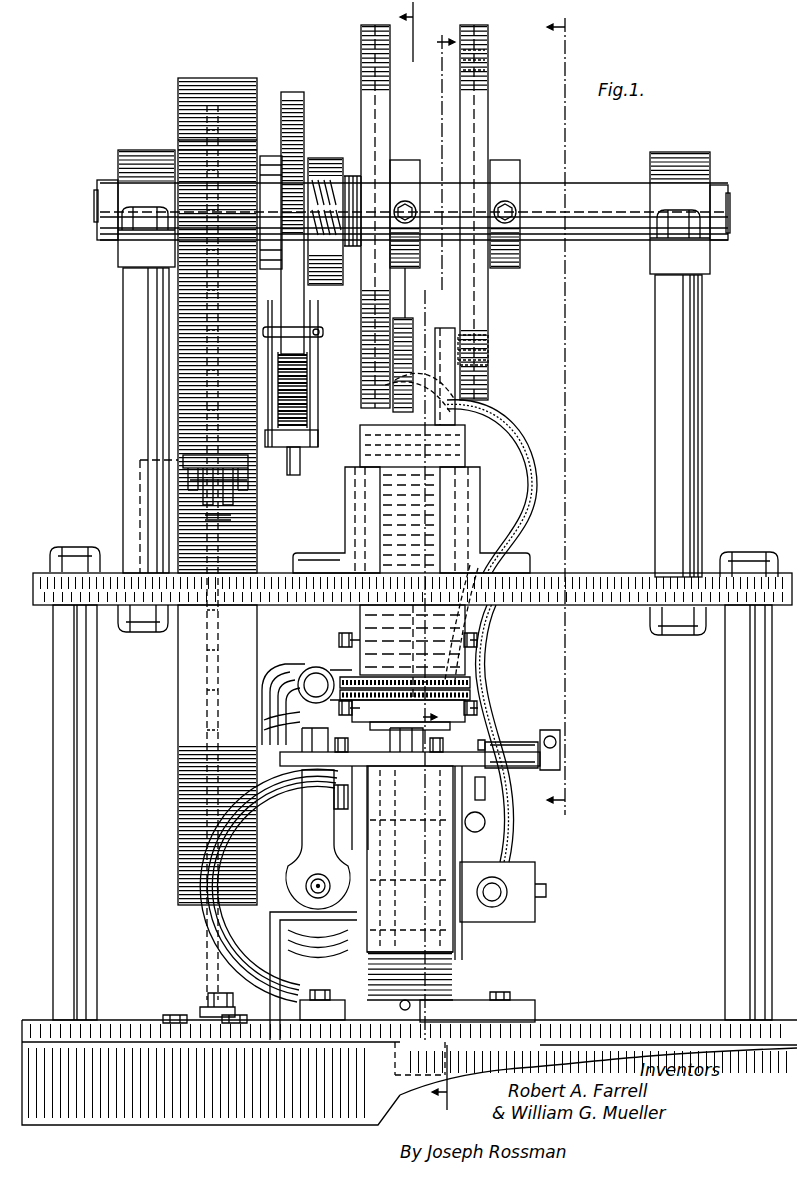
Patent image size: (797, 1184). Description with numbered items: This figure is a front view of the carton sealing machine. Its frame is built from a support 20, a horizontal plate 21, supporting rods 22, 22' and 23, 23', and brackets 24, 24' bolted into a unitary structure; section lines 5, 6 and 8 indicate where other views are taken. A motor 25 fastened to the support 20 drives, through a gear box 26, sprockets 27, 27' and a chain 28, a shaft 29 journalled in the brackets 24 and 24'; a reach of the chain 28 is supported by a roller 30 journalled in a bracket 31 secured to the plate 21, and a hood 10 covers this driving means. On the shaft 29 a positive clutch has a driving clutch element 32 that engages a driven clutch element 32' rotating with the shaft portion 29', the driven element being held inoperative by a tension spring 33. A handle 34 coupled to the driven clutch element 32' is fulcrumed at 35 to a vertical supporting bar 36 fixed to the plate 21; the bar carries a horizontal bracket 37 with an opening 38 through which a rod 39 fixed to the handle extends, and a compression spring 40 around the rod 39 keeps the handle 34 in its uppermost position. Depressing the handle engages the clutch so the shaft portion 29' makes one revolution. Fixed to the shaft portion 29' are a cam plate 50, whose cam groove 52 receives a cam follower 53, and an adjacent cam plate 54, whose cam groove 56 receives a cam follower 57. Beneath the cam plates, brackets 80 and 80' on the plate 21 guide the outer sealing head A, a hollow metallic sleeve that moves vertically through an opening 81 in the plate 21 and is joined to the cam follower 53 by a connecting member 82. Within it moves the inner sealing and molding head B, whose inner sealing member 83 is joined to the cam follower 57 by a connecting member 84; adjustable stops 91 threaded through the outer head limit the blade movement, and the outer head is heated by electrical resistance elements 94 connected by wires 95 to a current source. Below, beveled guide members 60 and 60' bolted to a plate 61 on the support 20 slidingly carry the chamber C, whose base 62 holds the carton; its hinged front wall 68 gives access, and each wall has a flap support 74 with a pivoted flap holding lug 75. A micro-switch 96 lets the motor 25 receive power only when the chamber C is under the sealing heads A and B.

The section line 5- 5 is at (433, 556).
The section line 6- 6 is at (421, 379).
The section line 8- 8 is at (573, 421).
The hood 10 is at (205, 86).
The support 20 is at (93, 1108).
The horizontal plate 21 is at (52, 592).
The supporting rod 22 is at (96, 812).
The supporting rod 22' is at (719, 812).
The supporting rod 23 is at (124, 420).
The supporting rod 23' is at (704, 426).
The bracket 24 is at (126, 193).
The bracket 24' is at (703, 213).
The motor 25 is at (220, 927).
The gear box 26 is at (278, 680).
The sprocket 27 is at (196, 755).
The sprocket 27' is at (194, 127).
The chain 28 is at (222, 553).
The shaft 29 is at (231, 210).
The shaft portion 29' is at (575, 232).
The roller 30 is at (230, 447).
The bracket 31 is at (138, 498).
The driving clutch element 32 is at (269, 195).
The driven clutch element 32' is at (325, 204).
The tension spring 33 is at (352, 255).
The handle 34 is at (293, 92).
The fulcrum 35 is at (322, 342).
The vertical supporting bar 36 is at (305, 539).
The bracket 37 is at (318, 437).
The opening 38 is at (300, 455).
The rod 39 is at (293, 477).
The compression spring 40 is at (305, 395).
The cam plate 50 is at (362, 87).
The cam groove 52 is at (385, 53).
The cam follower 53 is at (420, 318).
The cam plate 54 is at (483, 107).
The cam groove 56 is at (489, 52).
The cam follower 57 is at (490, 348).
The beveled guide member 60 is at (254, 1016).
The beveled guide member 60' is at (489, 1002).
The plate 61 is at (462, 1033).
The base 62 is at (371, 1003).
The front wall 68 is at (465, 948).
The flap support 74 is at (518, 766).
The flap holding lug 75 is at (520, 733).
The bracket 80 is at (336, 520).
The bracket 80' is at (485, 520).
The opening 81 is at (485, 612).
The connecting member 82 is at (425, 300).
The inner sealing member 83 is at (393, 452).
The connecting member 84 is at (447, 327).
The adjustable stop 91 is at (337, 640).
The electrical resistance element 94 is at (316, 670).
The wire 95 is at (507, 520).
The micro-switch 96 is at (507, 858).
The outer sealing head A is at (450, 445).
The inner sealing and molding head B is at (372, 488).
The chamber C is at (463, 975).